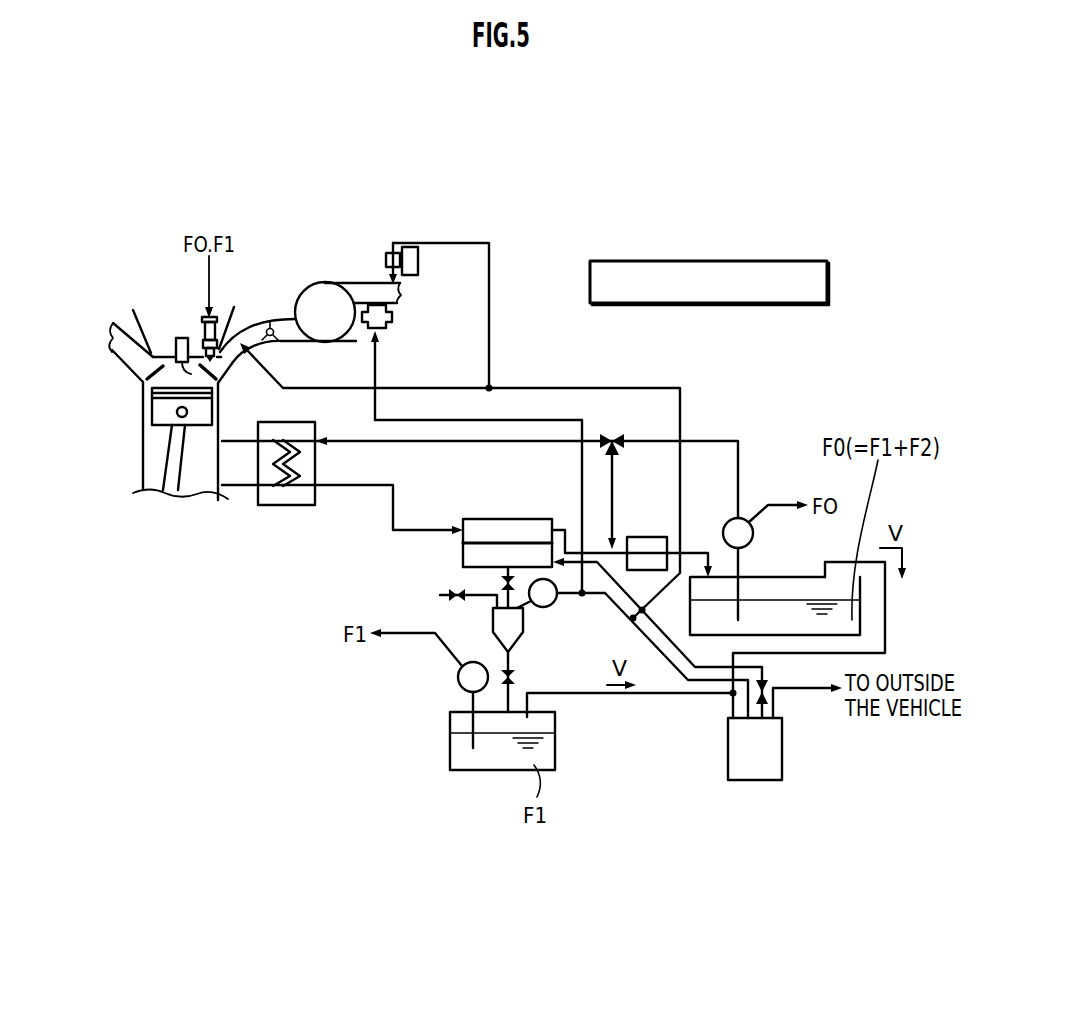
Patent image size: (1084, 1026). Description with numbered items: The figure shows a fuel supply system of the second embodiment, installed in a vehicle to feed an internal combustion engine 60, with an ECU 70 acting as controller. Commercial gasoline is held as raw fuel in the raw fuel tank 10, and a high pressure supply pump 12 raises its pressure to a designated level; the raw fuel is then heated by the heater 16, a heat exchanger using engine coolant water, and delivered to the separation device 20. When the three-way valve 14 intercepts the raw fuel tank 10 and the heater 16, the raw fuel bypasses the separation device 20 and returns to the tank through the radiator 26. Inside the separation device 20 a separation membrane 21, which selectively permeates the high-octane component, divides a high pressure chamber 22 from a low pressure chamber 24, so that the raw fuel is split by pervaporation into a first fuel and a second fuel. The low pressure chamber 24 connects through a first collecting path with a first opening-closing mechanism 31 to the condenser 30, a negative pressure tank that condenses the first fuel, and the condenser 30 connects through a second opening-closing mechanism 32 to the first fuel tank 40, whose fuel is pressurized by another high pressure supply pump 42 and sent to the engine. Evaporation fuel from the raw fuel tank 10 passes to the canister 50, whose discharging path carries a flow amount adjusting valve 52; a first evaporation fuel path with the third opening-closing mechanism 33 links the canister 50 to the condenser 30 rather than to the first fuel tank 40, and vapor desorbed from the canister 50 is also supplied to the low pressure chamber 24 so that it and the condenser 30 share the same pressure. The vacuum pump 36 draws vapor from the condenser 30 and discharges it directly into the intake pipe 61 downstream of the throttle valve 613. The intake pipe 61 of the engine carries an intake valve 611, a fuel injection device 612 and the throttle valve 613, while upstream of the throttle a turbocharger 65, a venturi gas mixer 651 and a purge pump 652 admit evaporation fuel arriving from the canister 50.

The internal combustion engine 60 is at (103, 295).
The intake pipe 61 is at (240, 362).
The intake valve 611 is at (233, 309).
The fuel injection device 612 is at (200, 323).
The throttle valve 613 is at (273, 327).
The turbocharger 65 is at (326, 295).
The venturi gas mixer 651 is at (393, 318).
The purge pump 652 is at (418, 270).
The heater 16 is at (284, 506).
The ECU 70 is at (786, 261).
The three-way valve 14 is at (612, 434).
The separation device 20 is at (491, 515).
The separation membrane 21 is at (490, 542).
The high pressure chamber 22 is at (472, 525).
The low pressure chamber 24 is at (463, 553).
The radiator 26 is at (646, 537).
The high pressure supply pump 12 is at (754, 533).
The raw fuel tank 10 is at (770, 577).
The canister 50 is at (765, 781).
The flow amount adjusting valve 52 is at (768, 688).
The vacuum pump 36 is at (548, 606).
The first opening-closing mechanism 31 is at (500, 583).
The third opening-closing mechanism 33 is at (449, 600).
The condenser 30 is at (497, 642).
The second opening-closing mechanism 32 is at (516, 677).
The high pressure supply pump 42 is at (458, 677).
The first fuel tank 40 is at (556, 722).